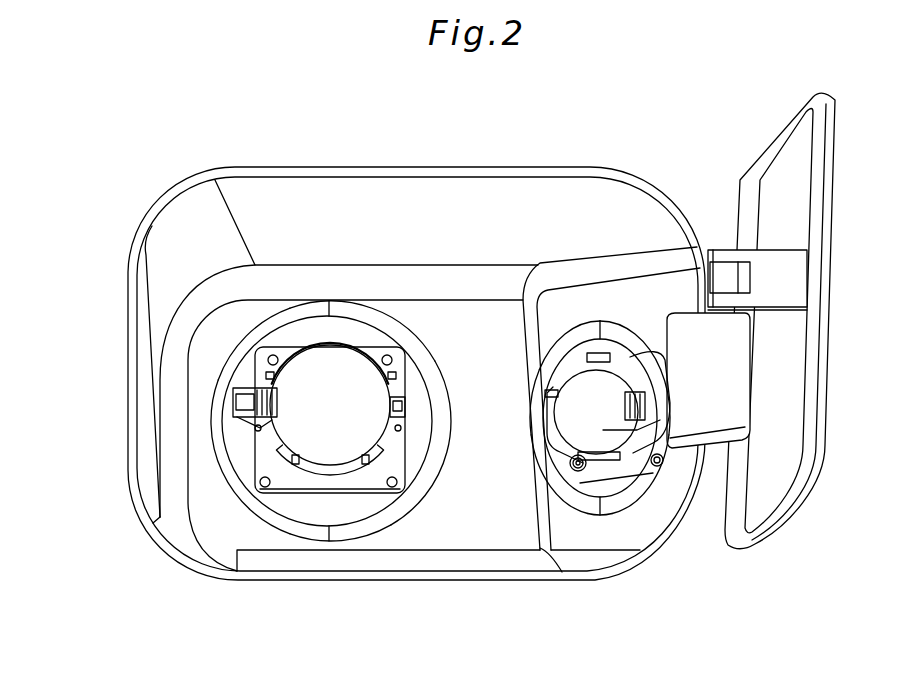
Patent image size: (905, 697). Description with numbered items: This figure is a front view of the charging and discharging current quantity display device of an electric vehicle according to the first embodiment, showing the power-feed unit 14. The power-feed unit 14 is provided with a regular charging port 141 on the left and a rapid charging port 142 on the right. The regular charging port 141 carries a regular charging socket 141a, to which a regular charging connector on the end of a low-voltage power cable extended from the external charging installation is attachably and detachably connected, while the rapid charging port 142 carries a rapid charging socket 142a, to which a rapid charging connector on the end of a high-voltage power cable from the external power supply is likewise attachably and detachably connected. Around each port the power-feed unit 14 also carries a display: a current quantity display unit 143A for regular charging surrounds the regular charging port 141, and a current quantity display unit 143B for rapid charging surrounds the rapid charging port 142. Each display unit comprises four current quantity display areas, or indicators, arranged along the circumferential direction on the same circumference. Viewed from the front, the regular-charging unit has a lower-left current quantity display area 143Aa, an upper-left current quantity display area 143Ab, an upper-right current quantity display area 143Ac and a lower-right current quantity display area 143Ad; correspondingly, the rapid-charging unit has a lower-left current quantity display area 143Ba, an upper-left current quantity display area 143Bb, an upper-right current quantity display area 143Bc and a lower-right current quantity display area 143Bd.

The power-feed unit 14 is at (560, 157).
The regular charging port 141 is at (233, 485).
The regular charging socket 141a is at (263, 462).
The rapid charging port 142 is at (607, 499).
The rapid charging socket 142a is at (630, 470).
The current quantity display unit for regular charging 143A is at (267, 390).
The current quantity display area 143Aa is at (253, 503).
The current quantity display area 143Ab is at (230, 374).
The current quantity display area 143Ac is at (373, 317).
The current quantity display area 143Ad is at (357, 533).
The current quantity display unit for rapid charging 143B is at (612, 381).
The current quantity display area 143Ba is at (557, 483).
The current quantity display area 143Bb is at (573, 343).
The current quantity display area 143Bc is at (633, 337).
The current quantity display area 143Bd is at (652, 487).